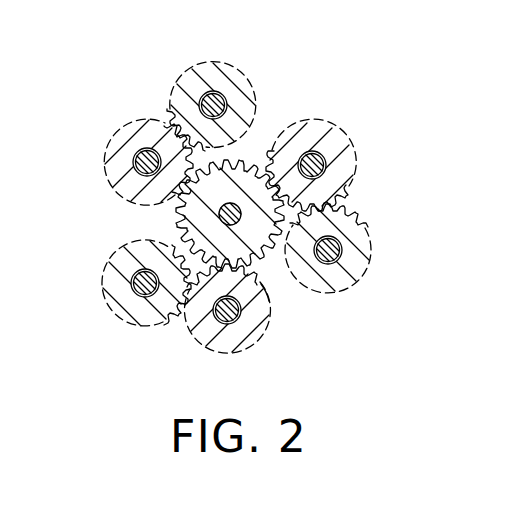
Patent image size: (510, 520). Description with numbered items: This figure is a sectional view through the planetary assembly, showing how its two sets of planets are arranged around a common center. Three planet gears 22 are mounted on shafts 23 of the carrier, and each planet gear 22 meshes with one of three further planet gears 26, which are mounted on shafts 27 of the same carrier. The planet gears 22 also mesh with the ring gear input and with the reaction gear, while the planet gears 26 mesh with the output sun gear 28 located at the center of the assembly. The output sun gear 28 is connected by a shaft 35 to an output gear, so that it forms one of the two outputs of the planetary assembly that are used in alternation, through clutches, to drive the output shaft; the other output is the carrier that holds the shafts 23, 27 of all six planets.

The planet gear 22 is at (251, 110).
The shaft 23 is at (215, 91).
The planet gear 26 is at (116, 180).
The shaft 27 is at (133, 157).
The output sun gear 28 is at (262, 298).
The shaft 35 is at (221, 213).